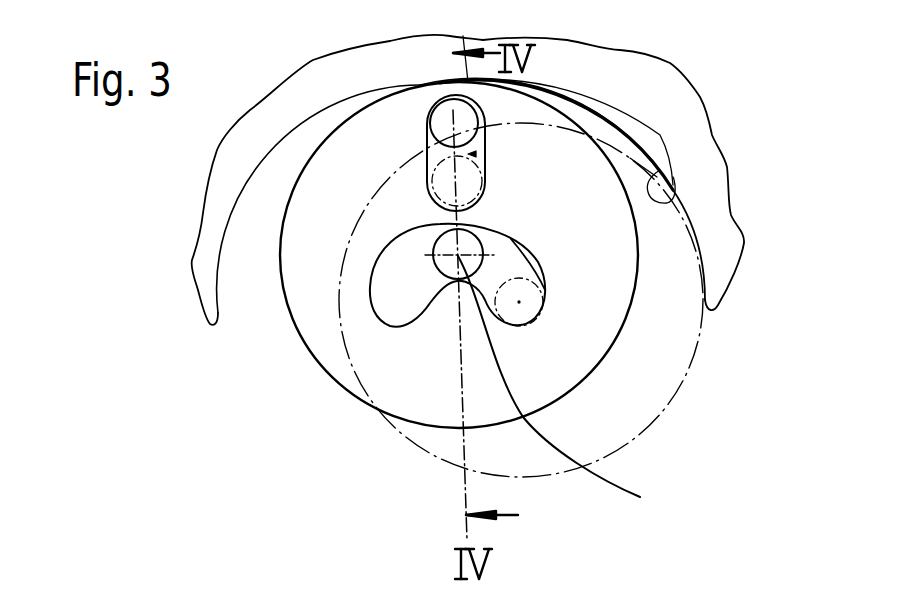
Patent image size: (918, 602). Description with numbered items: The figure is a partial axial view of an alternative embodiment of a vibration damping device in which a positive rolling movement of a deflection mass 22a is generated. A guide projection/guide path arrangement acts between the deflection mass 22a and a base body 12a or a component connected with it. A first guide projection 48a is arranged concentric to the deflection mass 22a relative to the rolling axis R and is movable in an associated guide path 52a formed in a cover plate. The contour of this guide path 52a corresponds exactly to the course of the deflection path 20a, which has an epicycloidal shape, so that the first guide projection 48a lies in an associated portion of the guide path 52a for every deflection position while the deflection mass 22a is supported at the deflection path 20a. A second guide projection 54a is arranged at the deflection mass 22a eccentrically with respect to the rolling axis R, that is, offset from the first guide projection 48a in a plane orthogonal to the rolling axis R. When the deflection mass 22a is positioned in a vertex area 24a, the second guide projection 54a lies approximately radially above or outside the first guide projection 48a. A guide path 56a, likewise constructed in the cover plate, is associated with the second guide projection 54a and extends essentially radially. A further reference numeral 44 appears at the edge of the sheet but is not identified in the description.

The base body 12a is at (698, 108).
The deflection path 20a is at (673, 202).
The vertex area 24a is at (440, 83).
The deflection mass 22a is at (578, 350).
The second guide projection 54a is at (453, 117).
The guide path 56a is at (437, 137).
The first guide projection 48a is at (458, 256).
The guide path 52a is at (540, 287).
The rolling axis R is at (563, 390).
The component 44 is at (878, 14).